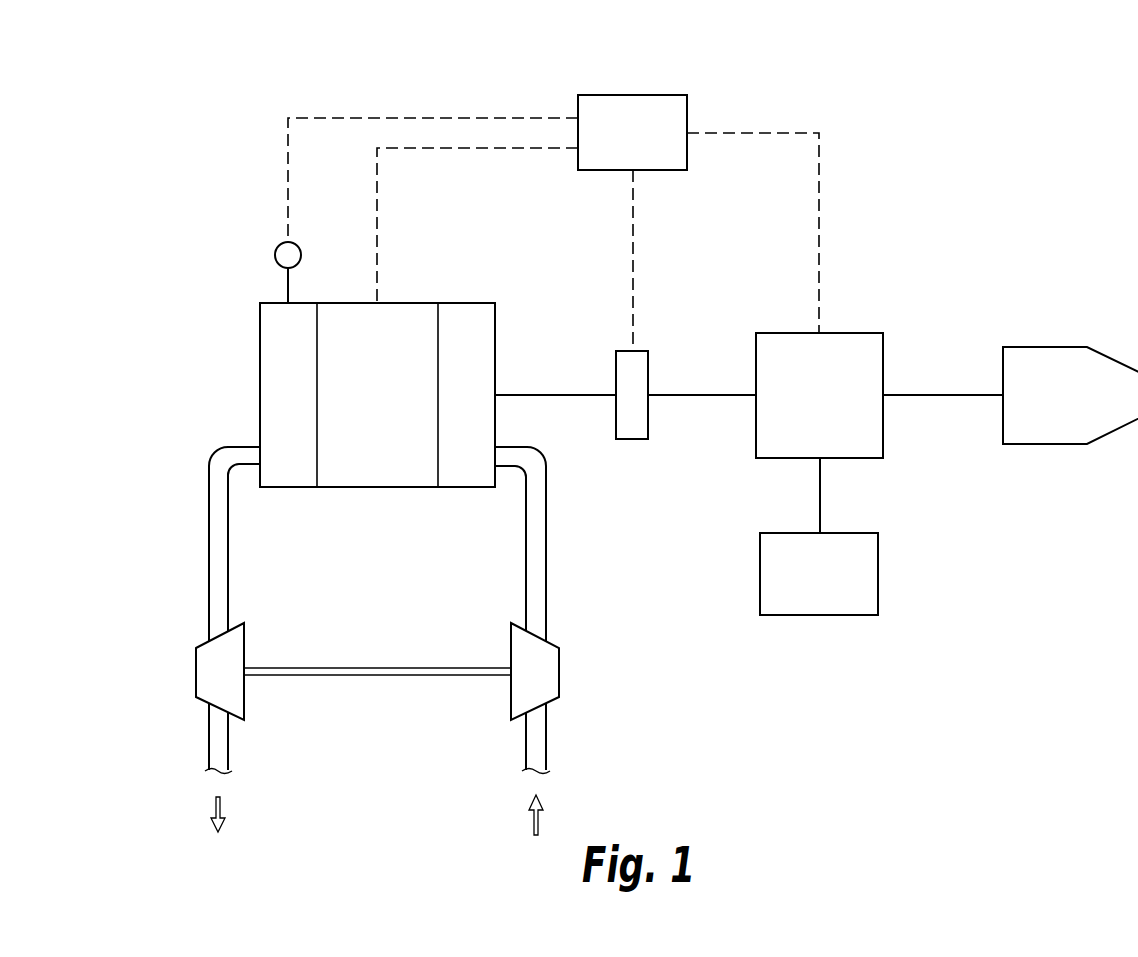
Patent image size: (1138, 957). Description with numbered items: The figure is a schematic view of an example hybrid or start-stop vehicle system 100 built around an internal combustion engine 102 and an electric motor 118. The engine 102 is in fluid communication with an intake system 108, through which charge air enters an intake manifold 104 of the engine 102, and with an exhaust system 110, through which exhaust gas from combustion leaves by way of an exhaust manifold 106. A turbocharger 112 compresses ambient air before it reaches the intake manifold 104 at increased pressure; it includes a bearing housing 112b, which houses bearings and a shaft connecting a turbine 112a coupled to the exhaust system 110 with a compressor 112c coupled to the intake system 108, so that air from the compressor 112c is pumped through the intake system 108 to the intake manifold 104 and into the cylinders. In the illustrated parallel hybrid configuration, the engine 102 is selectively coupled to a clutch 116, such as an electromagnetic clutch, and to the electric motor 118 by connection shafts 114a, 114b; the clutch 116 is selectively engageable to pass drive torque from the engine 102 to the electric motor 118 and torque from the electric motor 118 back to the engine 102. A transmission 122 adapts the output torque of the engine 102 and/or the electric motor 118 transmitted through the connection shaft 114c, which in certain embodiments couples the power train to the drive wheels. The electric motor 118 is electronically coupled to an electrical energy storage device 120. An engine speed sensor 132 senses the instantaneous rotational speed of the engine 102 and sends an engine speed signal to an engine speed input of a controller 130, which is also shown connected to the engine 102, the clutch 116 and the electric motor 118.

The vehicle system 100 is at (845, 94).
The engine 102 is at (377, 395).
The intake manifold 104 is at (478, 432).
The exhaust manifold 106 is at (280, 387).
The intake system 108 is at (584, 554).
The exhaust system 110 is at (188, 548).
The turbocharger 112 is at (427, 633).
The turbine 112a is at (248, 640).
The bearing housing 112b is at (362, 677).
The compressor 112c is at (562, 663).
The connection shaft 114a is at (548, 392).
The connection shaft 114b is at (690, 398).
The connection shaft 114c is at (938, 392).
The clutch 116 is at (645, 352).
The electric motor 118 is at (836, 408).
The electrical energy storage device 120 is at (835, 586).
The transmission 122 is at (1073, 408).
The controller 130 is at (649, 145).
The engine speed sensor 132 is at (274, 262).